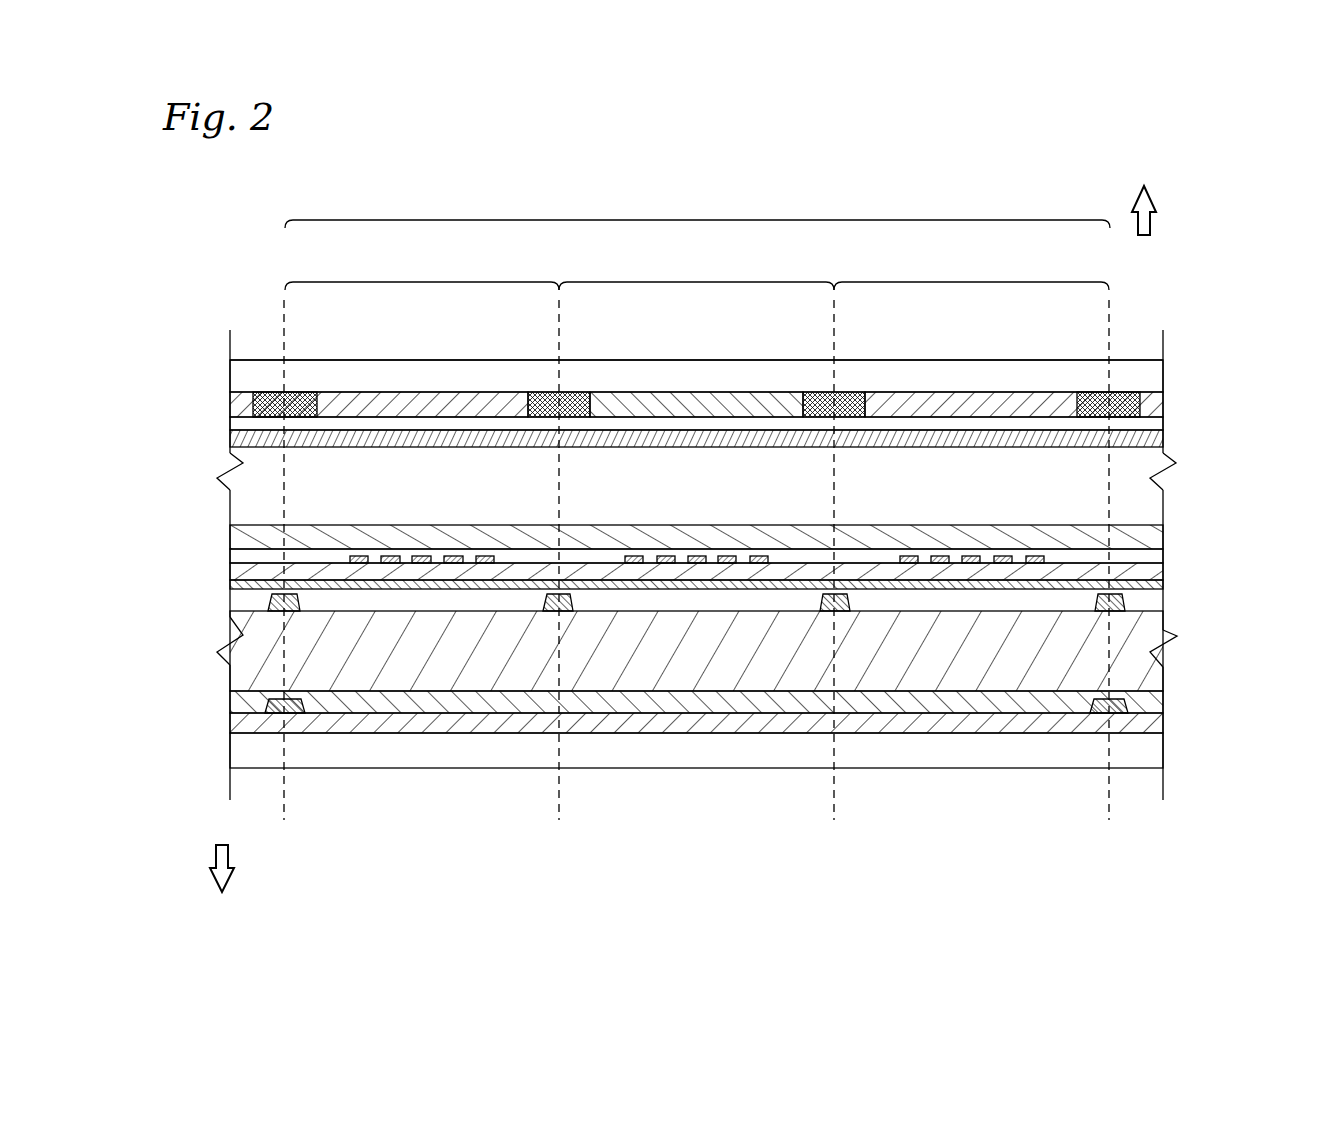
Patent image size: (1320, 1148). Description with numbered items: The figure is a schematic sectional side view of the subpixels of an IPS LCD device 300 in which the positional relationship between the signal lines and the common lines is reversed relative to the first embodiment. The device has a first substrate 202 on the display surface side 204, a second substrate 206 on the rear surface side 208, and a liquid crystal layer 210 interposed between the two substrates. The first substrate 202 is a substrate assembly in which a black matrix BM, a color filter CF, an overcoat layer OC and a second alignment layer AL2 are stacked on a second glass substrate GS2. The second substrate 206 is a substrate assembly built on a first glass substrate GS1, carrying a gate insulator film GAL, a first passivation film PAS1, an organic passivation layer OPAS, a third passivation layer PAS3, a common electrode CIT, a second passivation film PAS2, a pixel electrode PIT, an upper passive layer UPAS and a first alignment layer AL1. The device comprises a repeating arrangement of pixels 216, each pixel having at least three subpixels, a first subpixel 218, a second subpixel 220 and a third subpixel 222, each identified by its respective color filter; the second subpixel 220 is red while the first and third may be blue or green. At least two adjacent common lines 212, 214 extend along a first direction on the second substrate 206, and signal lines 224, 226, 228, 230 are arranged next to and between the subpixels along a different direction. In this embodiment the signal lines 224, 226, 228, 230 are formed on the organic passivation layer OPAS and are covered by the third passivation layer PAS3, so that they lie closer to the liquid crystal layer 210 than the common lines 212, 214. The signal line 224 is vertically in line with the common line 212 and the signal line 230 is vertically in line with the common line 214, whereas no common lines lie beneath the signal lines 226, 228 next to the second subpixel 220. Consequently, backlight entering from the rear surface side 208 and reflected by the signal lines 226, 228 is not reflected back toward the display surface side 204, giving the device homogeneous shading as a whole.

The LCD device 300 is at (255, 284).
The display surface side 204 is at (1150, 225).
The rear surface side 208 is at (228, 853).
The first substrate 202 is at (208, 360).
The liquid crystal layer 210 is at (208, 447).
The second substrate 206 is at (208, 525).
The pixel 216 is at (693, 220).
The first subpixel 218 is at (438, 282).
The second subpixel 220 is at (693, 282).
The third subpixel 222 is at (970, 282).
The common line 212 is at (300, 597).
The common line 214 is at (1090, 704).
The signal line 224 is at (305, 702).
The signal line 226 is at (573, 600).
The signal line 228 is at (820, 600).
The signal line 230 is at (1095, 598).
The black matrix BM is at (300, 392).
The color filter CF is at (432, 402).
The second glass substrate GS2 is at (1153, 378).
The overcoat layer OC is at (1153, 424).
The second alignment layer AL2 is at (1157, 438).
The first alignment layer AL1 is at (1150, 540).
The upper passive layer UPAS is at (1153, 558).
The second passivation film PAS2 is at (1153, 573).
The third passivation layer PAS3 is at (1153, 598).
The organic passivation layer OPAS is at (1158, 670).
The first passivation film PAS1 is at (1153, 705).
The gate insulator film GAL is at (1153, 725).
The first glass substrate GS1 is at (1153, 752).
The common electrode CIT is at (508, 583).
The pixel electrode PIT is at (390, 557).